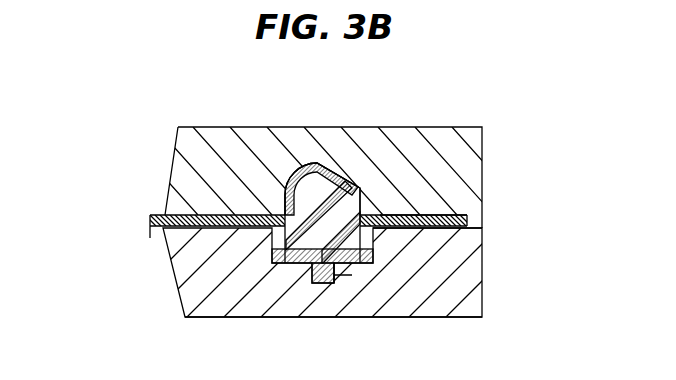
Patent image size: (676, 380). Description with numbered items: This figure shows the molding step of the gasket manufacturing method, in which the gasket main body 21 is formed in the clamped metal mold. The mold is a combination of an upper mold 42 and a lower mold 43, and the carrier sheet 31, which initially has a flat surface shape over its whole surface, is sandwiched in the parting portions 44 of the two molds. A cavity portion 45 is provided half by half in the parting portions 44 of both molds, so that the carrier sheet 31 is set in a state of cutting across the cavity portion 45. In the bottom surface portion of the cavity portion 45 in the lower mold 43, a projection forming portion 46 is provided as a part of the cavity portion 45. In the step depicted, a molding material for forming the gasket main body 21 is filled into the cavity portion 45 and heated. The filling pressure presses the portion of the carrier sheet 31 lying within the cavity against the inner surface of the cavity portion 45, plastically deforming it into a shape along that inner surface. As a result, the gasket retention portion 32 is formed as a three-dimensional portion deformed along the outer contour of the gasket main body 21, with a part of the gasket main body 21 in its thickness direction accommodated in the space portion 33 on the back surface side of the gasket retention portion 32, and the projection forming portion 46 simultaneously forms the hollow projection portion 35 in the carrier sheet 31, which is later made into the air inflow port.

The gasket main body 21 is at (312, 160).
The carrier sheet 31 is at (437, 215).
The gasket retention portion 32 is at (393, 292).
The space portion 33 is at (378, 238).
The hollow projection portion 35 is at (346, 268).
The upper mold 42 is at (180, 180).
The lower mold 43 is at (177, 272).
The parting portions 44 is at (153, 238).
The cavity portion 45 is at (320, 163).
The projection forming portion 46 is at (326, 284).